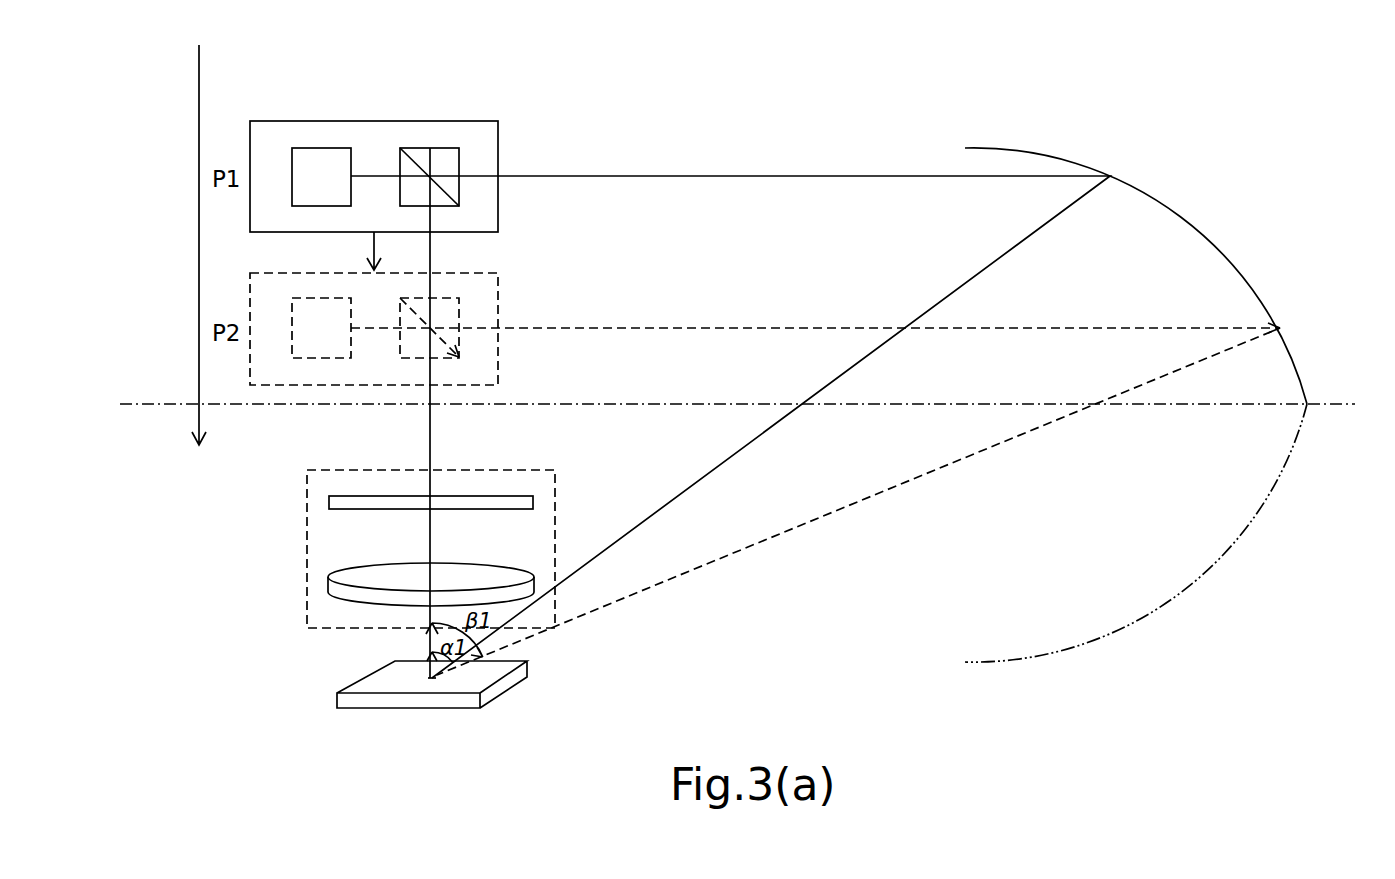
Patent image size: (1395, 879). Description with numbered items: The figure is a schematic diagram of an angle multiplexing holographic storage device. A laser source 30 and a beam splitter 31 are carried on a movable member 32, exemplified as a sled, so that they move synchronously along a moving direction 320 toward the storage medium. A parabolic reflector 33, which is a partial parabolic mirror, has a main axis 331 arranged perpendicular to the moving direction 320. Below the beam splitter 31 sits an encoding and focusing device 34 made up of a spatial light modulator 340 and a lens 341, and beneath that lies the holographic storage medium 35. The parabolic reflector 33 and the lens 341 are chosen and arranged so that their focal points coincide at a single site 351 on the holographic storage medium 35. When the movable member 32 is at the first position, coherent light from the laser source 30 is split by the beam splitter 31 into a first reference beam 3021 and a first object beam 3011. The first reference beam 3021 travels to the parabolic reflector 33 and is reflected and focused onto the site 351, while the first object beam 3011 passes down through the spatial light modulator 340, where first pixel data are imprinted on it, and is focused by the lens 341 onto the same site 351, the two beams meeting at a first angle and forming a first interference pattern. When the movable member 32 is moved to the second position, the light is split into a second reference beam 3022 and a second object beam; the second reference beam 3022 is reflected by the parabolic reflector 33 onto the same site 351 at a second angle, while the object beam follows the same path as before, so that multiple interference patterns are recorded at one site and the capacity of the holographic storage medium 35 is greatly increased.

The laser source 30 is at (321, 157).
The beam splitter 31 is at (431, 156).
The movable member 32 is at (484, 164).
The moving direction 320 is at (199, 235).
The first object beam 3011 is at (429, 243).
The first reference beam 3021 is at (720, 176).
The second reference beam 3022 is at (720, 328).
The parabolic reflector 33 is at (1205, 235).
The main axis 331 is at (1325, 404).
The encoding and focusing device 34 is at (315, 556).
The spatial light modulator 340 is at (462, 494).
The lens 341 is at (462, 562).
The holographic storage medium 35 is at (510, 693).
The site 351 is at (433, 677).